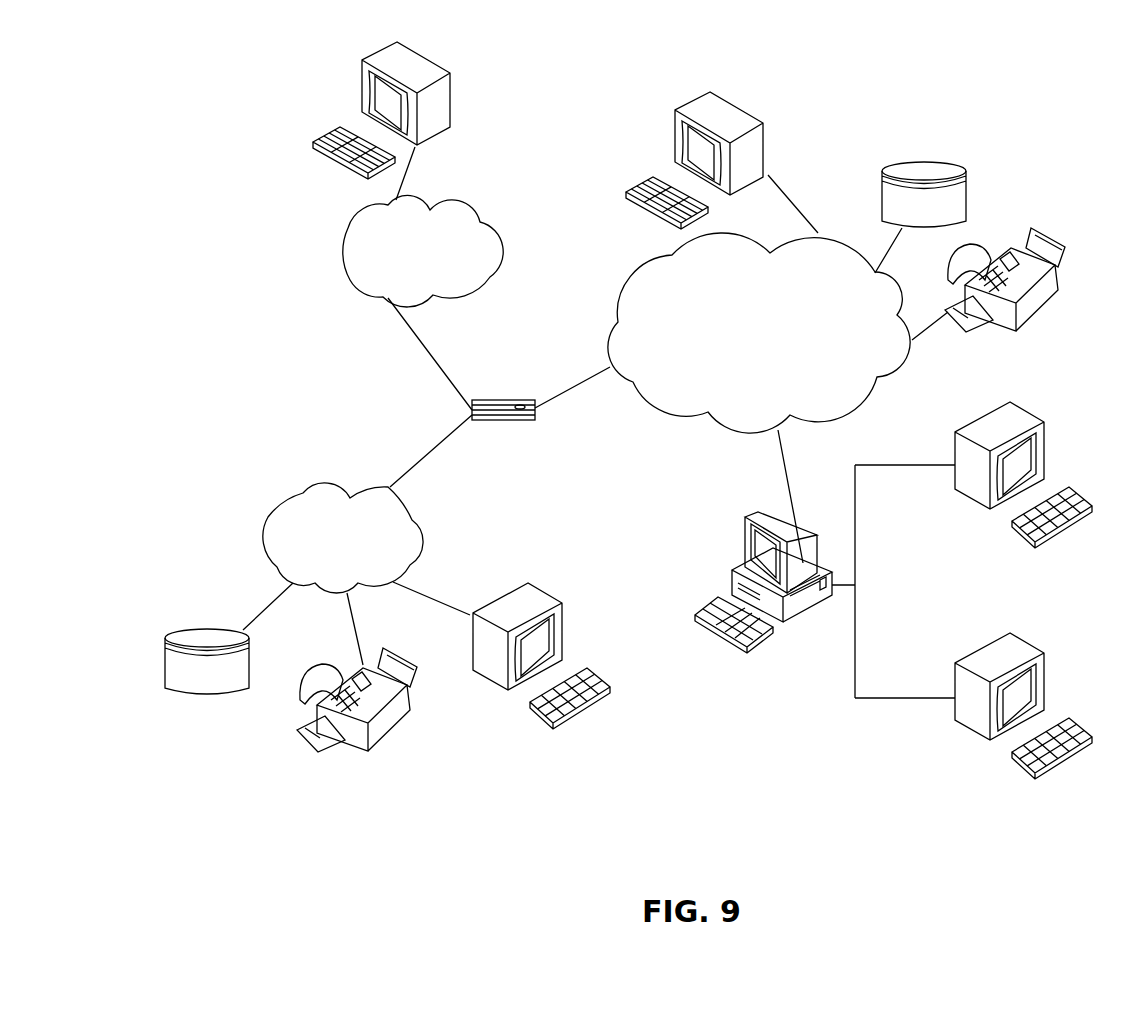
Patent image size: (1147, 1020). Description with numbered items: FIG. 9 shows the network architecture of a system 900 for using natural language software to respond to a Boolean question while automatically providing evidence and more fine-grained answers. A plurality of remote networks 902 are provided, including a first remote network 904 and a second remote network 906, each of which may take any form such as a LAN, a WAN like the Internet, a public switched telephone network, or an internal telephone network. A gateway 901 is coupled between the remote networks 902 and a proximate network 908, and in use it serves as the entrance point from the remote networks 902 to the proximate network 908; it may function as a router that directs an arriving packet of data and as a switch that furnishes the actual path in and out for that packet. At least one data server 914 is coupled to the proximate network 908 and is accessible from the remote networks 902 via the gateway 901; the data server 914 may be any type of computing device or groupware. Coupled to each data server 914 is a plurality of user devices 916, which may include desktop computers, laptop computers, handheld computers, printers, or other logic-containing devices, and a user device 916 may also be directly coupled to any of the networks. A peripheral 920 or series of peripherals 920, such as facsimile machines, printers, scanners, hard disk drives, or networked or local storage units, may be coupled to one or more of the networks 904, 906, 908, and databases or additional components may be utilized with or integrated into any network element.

The system 900 is at (661, 30).
The gateway 901 is at (503, 400).
The remote networks 902 is at (330, 330).
The first remote network 904 is at (266, 515).
The second remote network 906 is at (505, 258).
The proximate network 908 is at (878, 395).
The data server 914 is at (743, 542).
The user devices 916 is at (451, 101).
The peripheral 920 is at (922, 162).